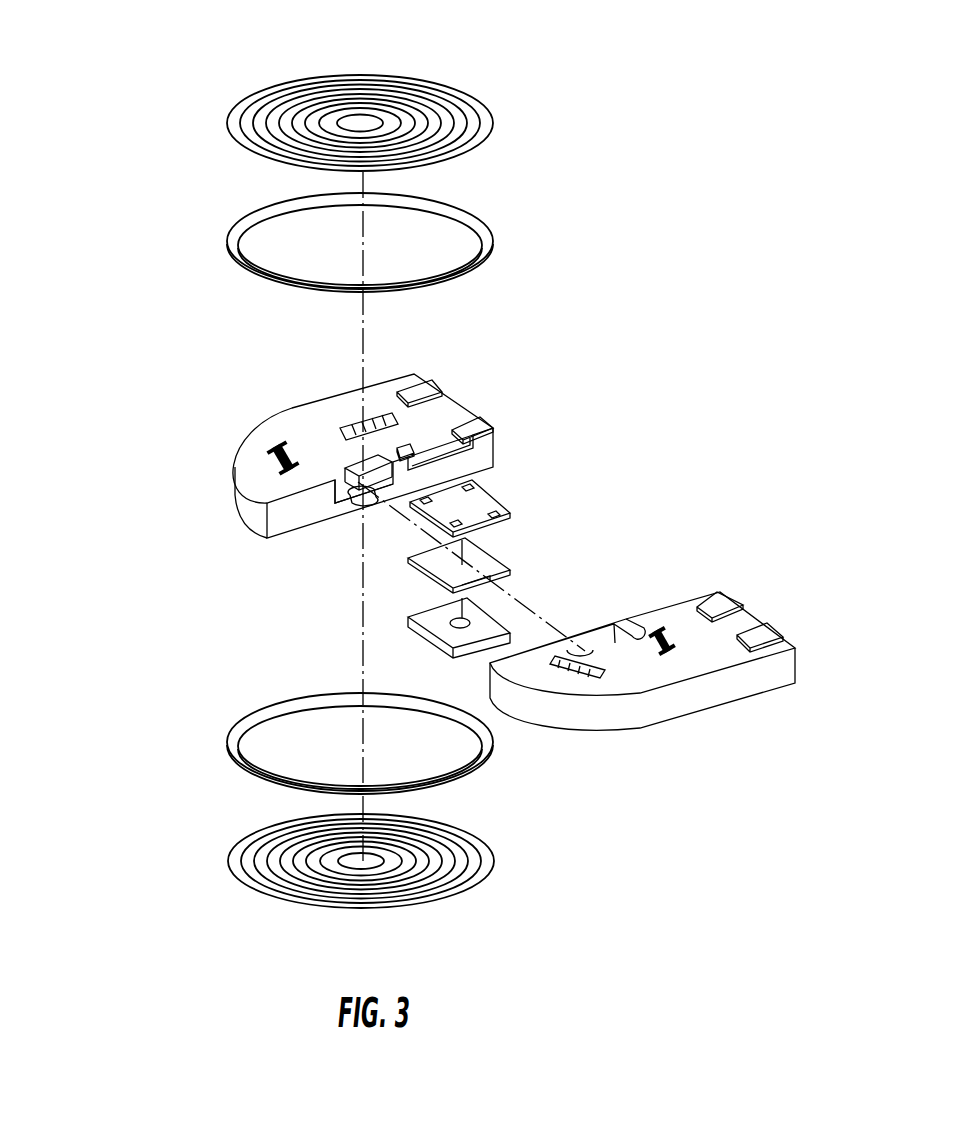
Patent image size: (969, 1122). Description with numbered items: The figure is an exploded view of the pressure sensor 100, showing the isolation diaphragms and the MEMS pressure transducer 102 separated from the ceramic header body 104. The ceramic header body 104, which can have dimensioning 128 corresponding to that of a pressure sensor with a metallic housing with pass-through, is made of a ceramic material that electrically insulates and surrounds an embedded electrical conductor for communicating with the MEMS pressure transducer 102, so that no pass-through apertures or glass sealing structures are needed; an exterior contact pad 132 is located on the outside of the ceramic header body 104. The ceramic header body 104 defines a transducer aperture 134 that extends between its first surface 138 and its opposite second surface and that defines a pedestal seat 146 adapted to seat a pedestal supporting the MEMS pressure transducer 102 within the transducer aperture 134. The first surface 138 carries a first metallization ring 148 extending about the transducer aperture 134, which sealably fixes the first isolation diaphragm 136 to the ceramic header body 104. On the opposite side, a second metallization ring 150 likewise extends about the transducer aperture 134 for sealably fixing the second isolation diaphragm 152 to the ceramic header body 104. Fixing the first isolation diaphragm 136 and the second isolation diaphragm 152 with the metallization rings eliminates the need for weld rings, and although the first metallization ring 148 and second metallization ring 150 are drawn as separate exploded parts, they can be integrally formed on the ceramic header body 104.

The pressure sensor 100 is at (461, 476).
The MEMS pressure transducer 102 is at (520, 470).
The ceramic header body 104 is at (292, 450).
The dimensioning 128 is at (292, 432).
The exterior contact pad 132 is at (468, 428).
The transducer aperture 134 is at (332, 462).
The first isolation diaphragm 136 is at (458, 93).
The first surface 138 is at (708, 633).
The pedestal seat 146 is at (352, 490).
The first metallization ring 148 is at (483, 232).
The second metallization ring 150 is at (248, 723).
The second isolation diaphragm 152 is at (257, 848).